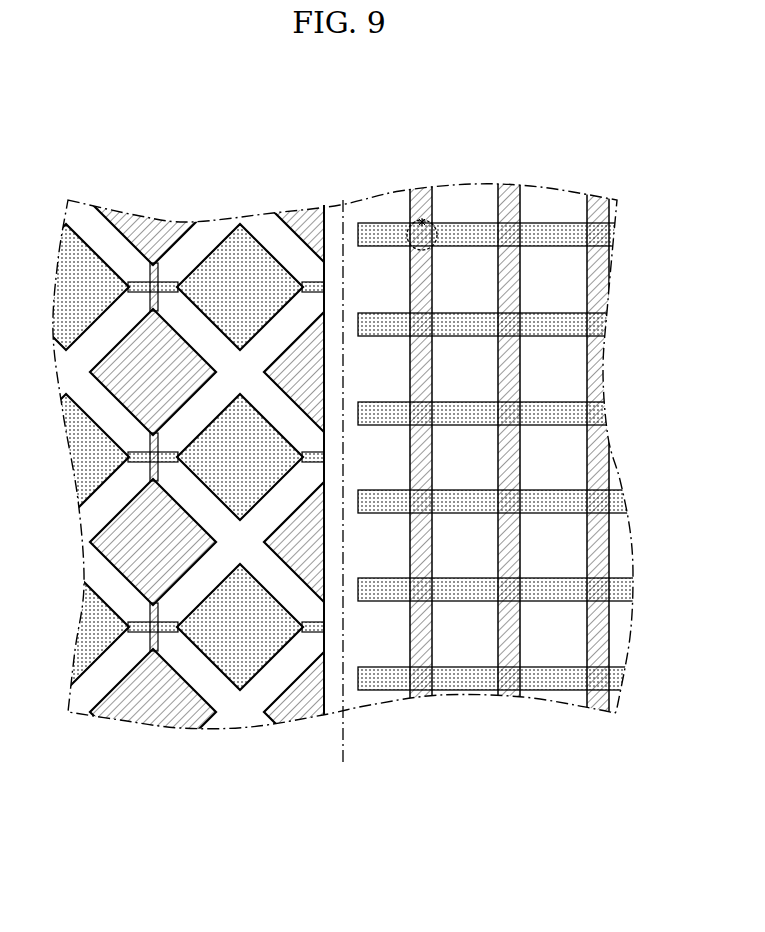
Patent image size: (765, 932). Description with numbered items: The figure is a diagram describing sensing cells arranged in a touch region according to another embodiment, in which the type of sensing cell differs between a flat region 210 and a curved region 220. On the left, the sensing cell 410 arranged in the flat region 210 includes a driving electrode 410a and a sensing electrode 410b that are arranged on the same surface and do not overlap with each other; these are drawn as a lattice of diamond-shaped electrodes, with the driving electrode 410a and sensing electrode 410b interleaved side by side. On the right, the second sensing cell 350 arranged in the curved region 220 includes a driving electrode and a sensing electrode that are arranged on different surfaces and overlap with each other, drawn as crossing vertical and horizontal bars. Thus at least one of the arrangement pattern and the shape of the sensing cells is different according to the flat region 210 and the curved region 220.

The flat region 210 is at (196, 446).
The curved region 220 is at (495, 454).
The second sensing cell 350 is at (422, 222).
The sensing cell 410 is at (196, 444).
The driving electrode 410a is at (227, 268).
The sensing electrode 410b is at (138, 340).